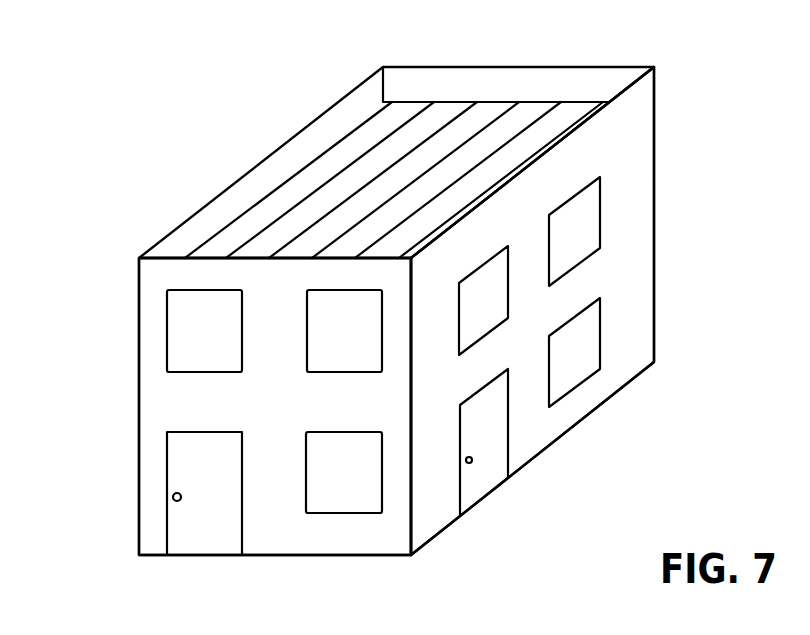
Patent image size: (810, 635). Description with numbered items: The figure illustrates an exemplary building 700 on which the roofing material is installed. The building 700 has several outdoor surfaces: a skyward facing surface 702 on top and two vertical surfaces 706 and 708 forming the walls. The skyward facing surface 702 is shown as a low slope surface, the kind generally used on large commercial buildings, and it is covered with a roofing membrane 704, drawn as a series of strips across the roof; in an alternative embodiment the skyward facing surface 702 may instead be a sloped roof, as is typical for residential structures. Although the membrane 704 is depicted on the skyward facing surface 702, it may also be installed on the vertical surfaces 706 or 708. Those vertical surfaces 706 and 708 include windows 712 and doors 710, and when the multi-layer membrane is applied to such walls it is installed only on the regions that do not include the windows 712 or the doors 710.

The building 700 is at (87, 56).
The skyward facing surface 702 is at (393, 107).
The roofing membrane 704 is at (438, 110).
The vertical surface 706 is at (641, 134).
The vertical surface 708 is at (147, 283).
The doors 710 is at (213, 537).
The windows 712 is at (185, 338).